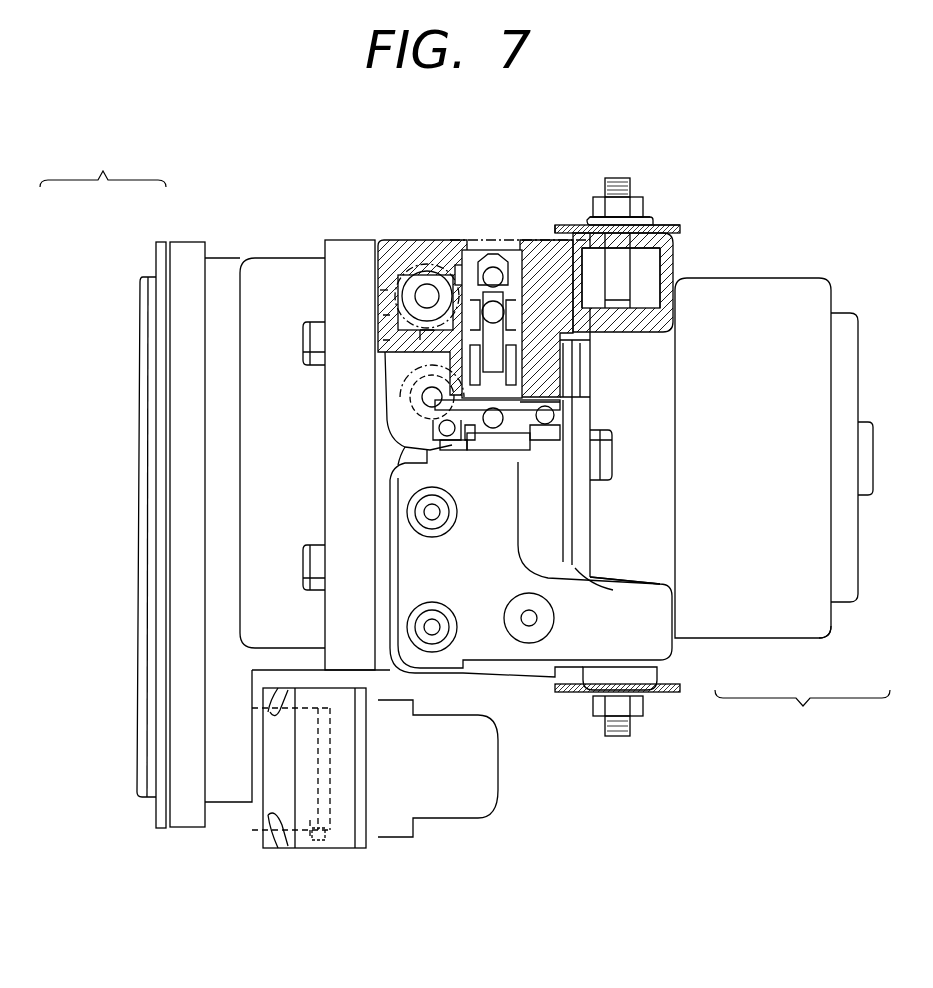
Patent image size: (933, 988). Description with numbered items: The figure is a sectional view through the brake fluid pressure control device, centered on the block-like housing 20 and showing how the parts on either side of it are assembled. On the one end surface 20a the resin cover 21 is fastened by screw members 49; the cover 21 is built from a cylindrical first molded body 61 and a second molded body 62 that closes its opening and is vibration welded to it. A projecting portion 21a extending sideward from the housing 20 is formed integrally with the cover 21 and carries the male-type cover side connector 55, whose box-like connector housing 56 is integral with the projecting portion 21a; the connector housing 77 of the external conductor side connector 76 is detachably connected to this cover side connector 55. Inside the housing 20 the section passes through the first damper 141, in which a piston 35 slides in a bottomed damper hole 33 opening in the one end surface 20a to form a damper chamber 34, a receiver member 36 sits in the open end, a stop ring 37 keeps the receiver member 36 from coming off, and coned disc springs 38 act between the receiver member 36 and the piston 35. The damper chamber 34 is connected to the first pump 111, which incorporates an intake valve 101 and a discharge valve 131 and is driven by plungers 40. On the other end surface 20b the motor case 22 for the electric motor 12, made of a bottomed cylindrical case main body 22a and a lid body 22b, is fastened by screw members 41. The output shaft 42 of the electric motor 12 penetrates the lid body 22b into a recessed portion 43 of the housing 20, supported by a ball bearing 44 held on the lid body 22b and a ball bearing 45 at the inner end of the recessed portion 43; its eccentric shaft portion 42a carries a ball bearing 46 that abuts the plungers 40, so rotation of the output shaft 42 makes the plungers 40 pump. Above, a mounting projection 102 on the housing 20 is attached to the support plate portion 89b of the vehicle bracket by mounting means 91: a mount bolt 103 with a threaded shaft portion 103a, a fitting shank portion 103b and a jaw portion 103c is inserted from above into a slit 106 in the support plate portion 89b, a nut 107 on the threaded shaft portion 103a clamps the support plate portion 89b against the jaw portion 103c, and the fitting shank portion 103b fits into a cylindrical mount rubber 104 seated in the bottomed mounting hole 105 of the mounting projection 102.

The cover 21 is at (103, 163).
The second molded body 62 is at (160, 263).
The first molded body 61 is at (180, 245).
The projecting portion 21a is at (215, 733).
The one end surface 20a is at (370, 585).
The screw members 49 is at (305, 338).
The receiver member 36 is at (385, 300).
The coned disc springs 38 is at (383, 325).
The stop ring 37 is at (384, 292).
The first damper 141 is at (405, 300).
The piston 35 is at (425, 290).
The damper chamber 34 is at (455, 268).
The discharge valve 131 is at (492, 268).
The intake valve 101 is at (525, 325).
The first pump 111 is at (572, 360).
The ball bearing 44 is at (550, 420).
The plungers 40 is at (590, 405).
The ball bearing 46 is at (530, 443).
The eccentric shaft portion 42a is at (485, 450).
The damper hole 33 is at (385, 358).
The recessed portion 43 is at (420, 452).
The ball bearing 45 is at (410, 468).
The housing 20 is at (470, 668).
The output shaft 42 is at (455, 522).
The other end surface 20b is at (585, 520).
The screw members 41 is at (612, 455).
The electric motor 12 is at (732, 470).
The motor case 22 is at (802, 709).
The lid body 22b is at (615, 548).
The case main body 22a is at (818, 620).
The slit 106 is at (623, 186).
The threaded shaft portion 103a is at (610, 200).
The mounting means 91 is at (640, 200).
The mounting projection 102 is at (670, 330).
The support plate portion 89b is at (668, 228).
The mount bolt 103 is at (650, 325).
The fitting shank portion 103b is at (668, 268).
The jaw portion 103c is at (665, 247).
The mount rubber 104 is at (662, 295).
The nut 107 is at (600, 235).
The mounting hole 105 is at (598, 245).
The connector housing 77 is at (345, 690).
The cover side connector 55 is at (380, 815).
The connector housing 56 is at (330, 820).
The external conductor side connector 76 is at (390, 756).